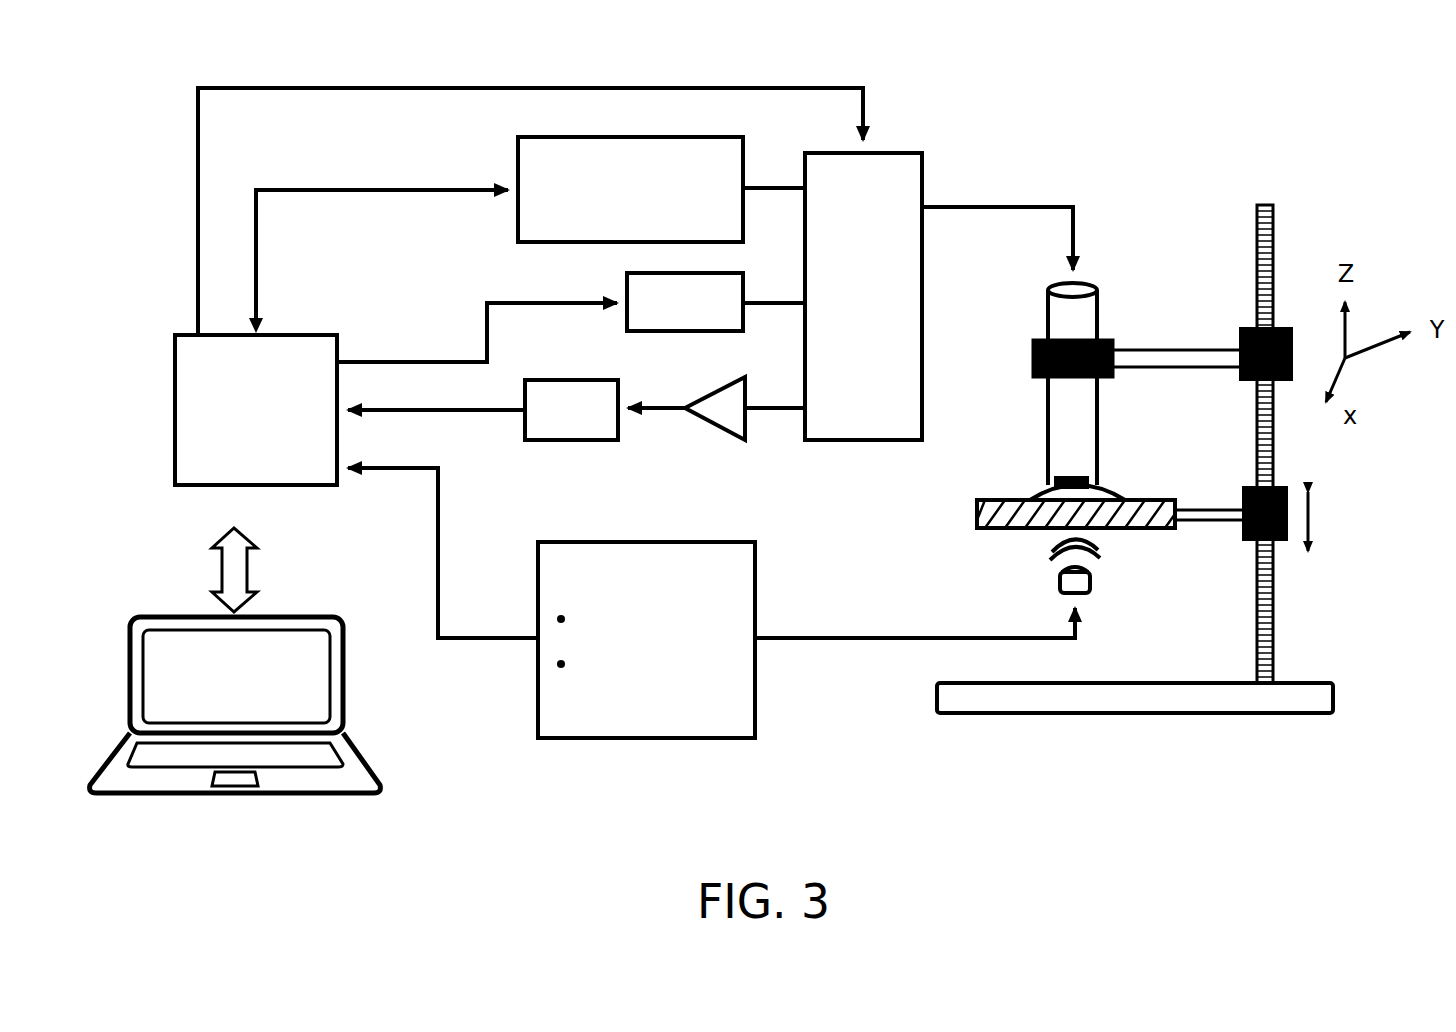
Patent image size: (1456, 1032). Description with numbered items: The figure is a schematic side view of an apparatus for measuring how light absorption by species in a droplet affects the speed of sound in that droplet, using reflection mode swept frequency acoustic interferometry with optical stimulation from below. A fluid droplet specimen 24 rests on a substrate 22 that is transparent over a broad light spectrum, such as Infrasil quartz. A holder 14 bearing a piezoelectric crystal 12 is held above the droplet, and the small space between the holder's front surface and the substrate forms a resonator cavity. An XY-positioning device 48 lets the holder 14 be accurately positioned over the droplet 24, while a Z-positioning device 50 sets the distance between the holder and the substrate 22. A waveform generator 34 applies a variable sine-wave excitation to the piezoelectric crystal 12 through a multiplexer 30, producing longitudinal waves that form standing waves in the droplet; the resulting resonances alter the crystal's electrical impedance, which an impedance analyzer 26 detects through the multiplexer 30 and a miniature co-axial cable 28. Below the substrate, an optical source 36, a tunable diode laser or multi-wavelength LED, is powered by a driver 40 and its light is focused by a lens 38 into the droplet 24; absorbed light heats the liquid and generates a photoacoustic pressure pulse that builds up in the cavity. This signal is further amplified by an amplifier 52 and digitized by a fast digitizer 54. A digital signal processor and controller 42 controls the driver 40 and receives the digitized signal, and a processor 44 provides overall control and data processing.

The piezoelectric crystal 12 is at (1068, 472).
The holder 14 is at (1108, 314).
The substrate 22 is at (1158, 496).
The fluid droplet specimen 24 is at (1028, 494).
The impedance analyzer 26 is at (658, 130).
The miniature co-axial cable 28 is at (1013, 196).
The multiplexer 30 is at (915, 146).
The waveform generator 34 is at (617, 284).
The optical source 36 is at (1050, 580).
The lens 38 is at (1112, 558).
The driver 40 is at (533, 701).
The digital signal processor and controller 42 is at (168, 422).
The processor 44 is at (217, 697).
The XY-positioning device 48 is at (1292, 318).
The Z-positioning device 50 is at (1280, 548).
The amplifier 52 is at (708, 428).
The fast digitizer 54 is at (534, 445).